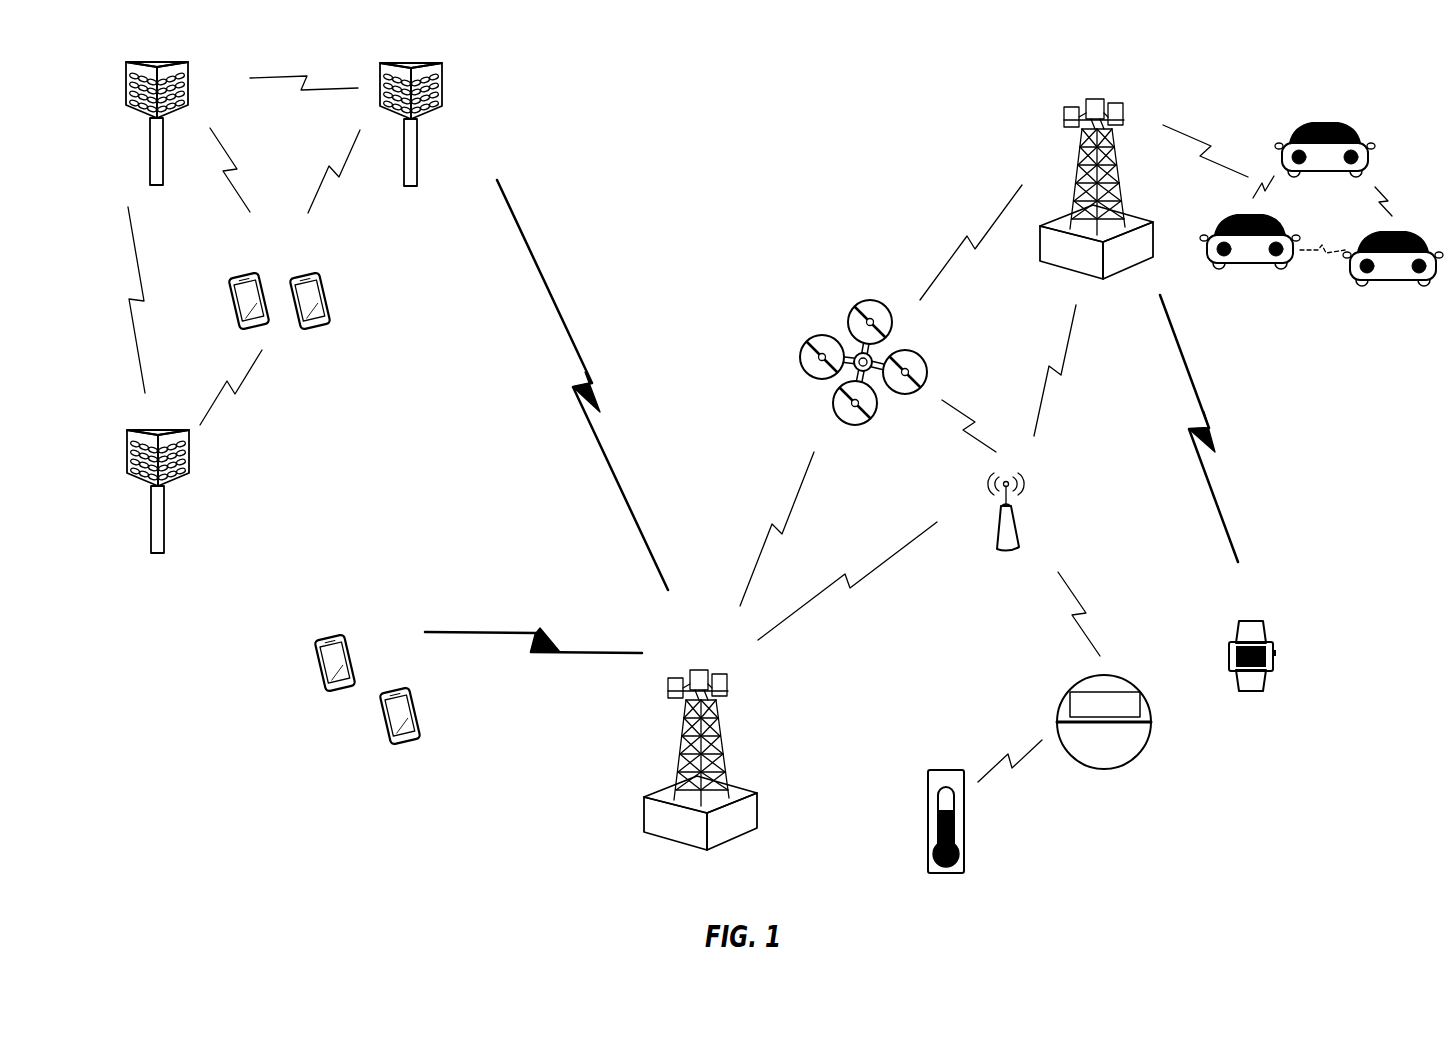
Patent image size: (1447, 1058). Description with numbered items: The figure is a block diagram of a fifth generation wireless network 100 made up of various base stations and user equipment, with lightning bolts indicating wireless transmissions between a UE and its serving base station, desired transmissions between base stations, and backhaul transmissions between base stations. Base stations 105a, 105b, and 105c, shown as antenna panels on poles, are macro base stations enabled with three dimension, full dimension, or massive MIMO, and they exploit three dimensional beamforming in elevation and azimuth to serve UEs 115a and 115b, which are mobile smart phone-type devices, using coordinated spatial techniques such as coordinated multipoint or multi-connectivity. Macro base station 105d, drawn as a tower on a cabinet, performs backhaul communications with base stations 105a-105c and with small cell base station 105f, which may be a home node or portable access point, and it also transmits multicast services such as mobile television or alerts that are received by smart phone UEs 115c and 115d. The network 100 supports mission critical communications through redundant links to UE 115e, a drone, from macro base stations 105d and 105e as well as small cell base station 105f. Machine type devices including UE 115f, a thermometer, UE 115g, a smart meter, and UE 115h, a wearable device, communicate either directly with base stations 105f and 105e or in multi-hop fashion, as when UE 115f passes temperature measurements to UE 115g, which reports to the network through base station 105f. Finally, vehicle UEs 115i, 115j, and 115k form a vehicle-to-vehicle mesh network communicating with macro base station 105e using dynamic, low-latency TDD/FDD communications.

The 5G network 100 is at (860, 97).
The base station 105a is at (151, 160).
The base station 105b is at (412, 168).
The base station 105c is at (153, 542).
The macro base station 105d is at (662, 838).
The macro base station 105e is at (1065, 264).
The small cell base station 105f is at (993, 545).
The UE 115a is at (238, 283).
The UE 115b is at (318, 295).
The UE 115c is at (321, 646).
The UE 115d is at (410, 705).
The UE 115e is at (803, 358).
The UE 115f is at (960, 868).
The UE 115g is at (1126, 765).
The UE 115h is at (1266, 690).
The UE 115i is at (1343, 129).
The UE 115j is at (1416, 283).
The UE 115k is at (1226, 270).